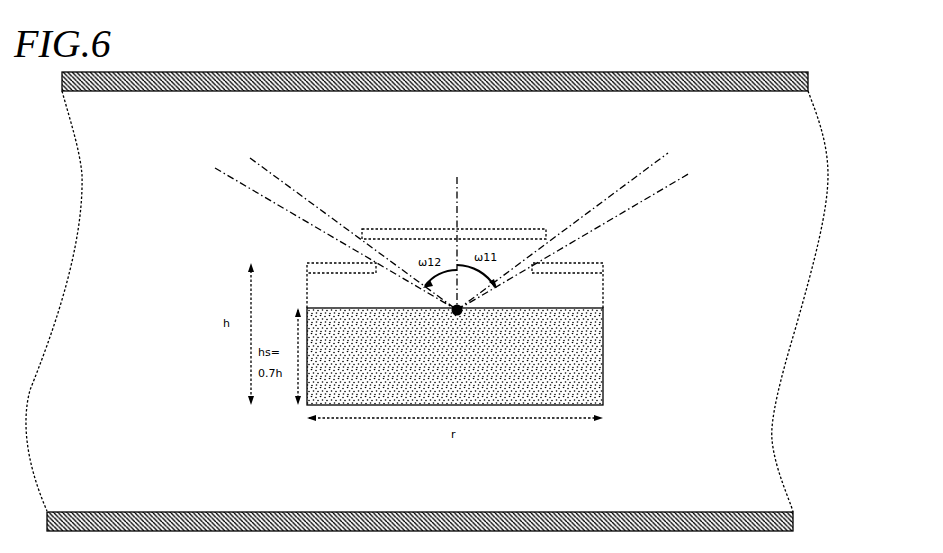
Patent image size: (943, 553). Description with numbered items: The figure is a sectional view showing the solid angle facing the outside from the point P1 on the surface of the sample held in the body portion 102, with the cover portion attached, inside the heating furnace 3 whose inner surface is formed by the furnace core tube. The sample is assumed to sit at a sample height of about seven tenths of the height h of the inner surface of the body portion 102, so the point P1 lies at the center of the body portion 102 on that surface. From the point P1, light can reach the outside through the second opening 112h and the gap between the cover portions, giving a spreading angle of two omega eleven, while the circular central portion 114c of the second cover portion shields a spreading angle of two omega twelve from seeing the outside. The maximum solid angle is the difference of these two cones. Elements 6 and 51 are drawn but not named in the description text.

The heating furnace 3 is at (190, 91).
The housing wall of light source module 6 is at (340, 252).
The light source substrate 51 is at (612, 310).
The body portion 102 is at (501, 285).
The second opening 112h is at (523, 283).
The central portion 114c is at (439, 229).
The point on the surface of the sample P1 is at (455, 325).